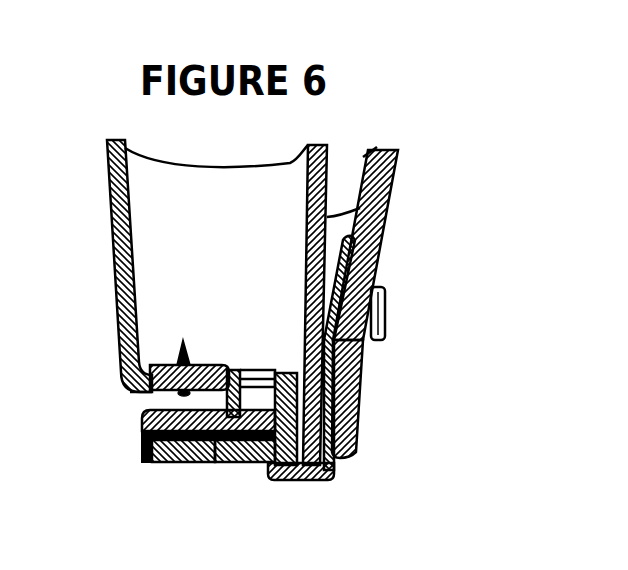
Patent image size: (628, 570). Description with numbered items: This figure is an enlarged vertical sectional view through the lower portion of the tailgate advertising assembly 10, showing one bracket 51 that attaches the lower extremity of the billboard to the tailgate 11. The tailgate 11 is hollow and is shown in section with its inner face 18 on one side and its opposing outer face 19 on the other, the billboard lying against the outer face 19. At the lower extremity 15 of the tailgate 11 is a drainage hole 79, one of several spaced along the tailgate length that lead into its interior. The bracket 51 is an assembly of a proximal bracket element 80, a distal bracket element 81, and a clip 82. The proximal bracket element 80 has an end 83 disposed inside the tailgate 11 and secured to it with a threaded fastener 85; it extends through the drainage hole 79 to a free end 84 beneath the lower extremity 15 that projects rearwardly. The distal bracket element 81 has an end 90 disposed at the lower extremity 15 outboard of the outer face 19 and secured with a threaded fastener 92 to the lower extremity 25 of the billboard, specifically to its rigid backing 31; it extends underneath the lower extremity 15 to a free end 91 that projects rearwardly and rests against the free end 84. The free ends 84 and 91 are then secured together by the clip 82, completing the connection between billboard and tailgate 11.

The tailgate advertising assembly 10 is at (91, 363).
The tailgate 11 is at (108, 320).
The lower extremity 15 is at (140, 392).
The inner face 18 is at (117, 263).
The outer face 19 is at (397, 186).
The lower extremity 25 is at (343, 453).
The backing 31 is at (372, 368).
The bracket 51 is at (347, 473).
The drainage hole 79 is at (253, 397).
The proximal bracket element 80 is at (238, 368).
The distal bracket element 81 is at (368, 397).
The clip 82 is at (143, 450).
The end 83 is at (213, 364).
The free end 84 is at (193, 463).
The threaded fastener 85 is at (178, 345).
The end 90 is at (385, 254).
The free end 91 is at (220, 463).
The threaded fastener 92 is at (395, 318).